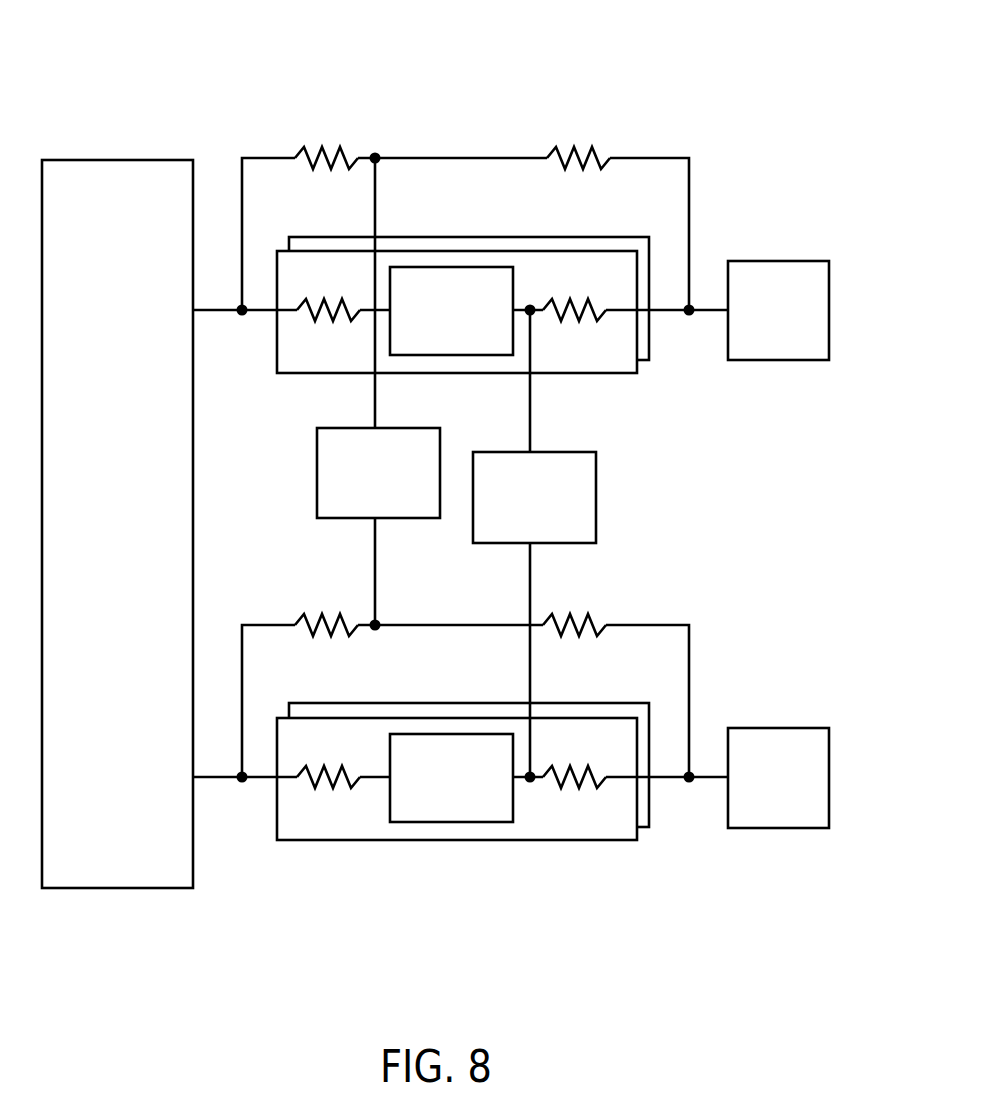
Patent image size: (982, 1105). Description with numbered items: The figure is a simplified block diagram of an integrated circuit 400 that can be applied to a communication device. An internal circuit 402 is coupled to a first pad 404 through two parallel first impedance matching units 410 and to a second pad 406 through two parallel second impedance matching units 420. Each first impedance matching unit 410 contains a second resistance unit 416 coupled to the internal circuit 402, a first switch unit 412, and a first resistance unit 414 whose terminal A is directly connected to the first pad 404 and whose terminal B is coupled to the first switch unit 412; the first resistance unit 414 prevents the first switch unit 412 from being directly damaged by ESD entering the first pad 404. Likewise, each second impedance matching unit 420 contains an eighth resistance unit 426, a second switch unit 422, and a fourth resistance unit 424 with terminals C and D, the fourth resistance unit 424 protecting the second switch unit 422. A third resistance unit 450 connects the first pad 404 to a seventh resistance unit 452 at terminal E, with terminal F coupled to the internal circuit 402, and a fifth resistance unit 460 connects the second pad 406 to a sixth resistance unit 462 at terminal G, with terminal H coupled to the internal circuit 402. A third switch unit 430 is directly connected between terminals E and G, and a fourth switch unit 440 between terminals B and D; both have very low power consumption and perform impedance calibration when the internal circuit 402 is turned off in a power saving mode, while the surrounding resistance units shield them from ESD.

The integrated circuit 400 is at (699, 78).
The internal circuit 402 is at (117, 158).
The first pad 404 is at (776, 259).
The second pad 406 is at (776, 726).
The first impedance matching unit 410 is at (557, 249).
The first switch unit 412 is at (453, 358).
The first resistance unit 414 is at (572, 322).
The second resistance unit 416 is at (326, 322).
The second impedance matching unit 420 is at (557, 716).
The second switch unit 422 is at (452, 825).
The fourth resistance unit 424 is at (572, 790).
The eighth resistance unit 426 is at (325, 790).
The third switch unit 430 is at (317, 471).
The fourth switch unit 440 is at (597, 497).
The third resistance unit 450 is at (576, 146).
The seventh resistance unit 452 is at (328, 146).
The fifth resistance unit 460 is at (576, 612).
The sixth resistance unit 462 is at (327, 612).